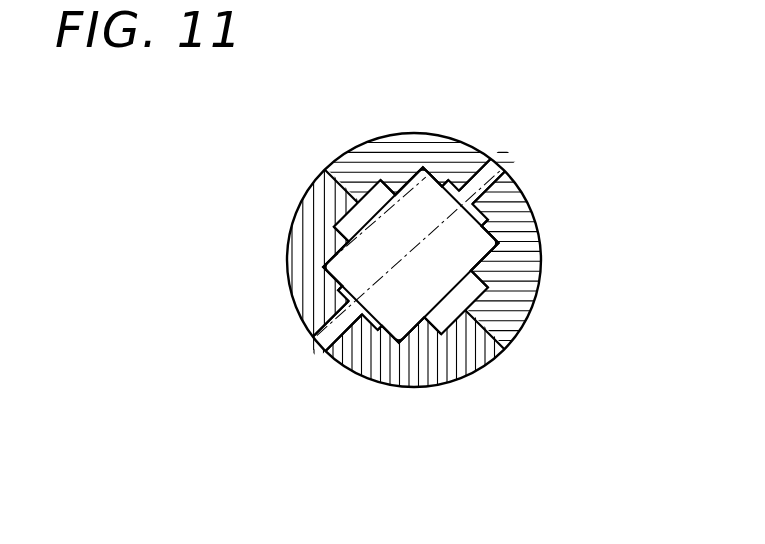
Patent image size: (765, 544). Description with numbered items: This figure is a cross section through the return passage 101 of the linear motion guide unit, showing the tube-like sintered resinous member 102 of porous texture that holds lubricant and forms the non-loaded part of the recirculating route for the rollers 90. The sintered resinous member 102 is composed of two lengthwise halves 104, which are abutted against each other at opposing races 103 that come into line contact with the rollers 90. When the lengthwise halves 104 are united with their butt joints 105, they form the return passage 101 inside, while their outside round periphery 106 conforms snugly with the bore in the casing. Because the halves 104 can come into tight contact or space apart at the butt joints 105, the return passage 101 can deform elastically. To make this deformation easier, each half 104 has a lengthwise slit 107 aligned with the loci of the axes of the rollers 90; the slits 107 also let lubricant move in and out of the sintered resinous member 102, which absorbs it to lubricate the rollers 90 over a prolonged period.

The roller 90 is at (364, 284).
The return passage 101 is at (372, 263).
The sintered resinous member 102 is at (391, 130).
The race 103 is at (494, 228).
The lengthwise half 104 is at (424, 160).
The butt joint 105 is at (346, 180).
The outside round periphery 106 is at (546, 268).
The lengthwise slit 107 is at (490, 178).